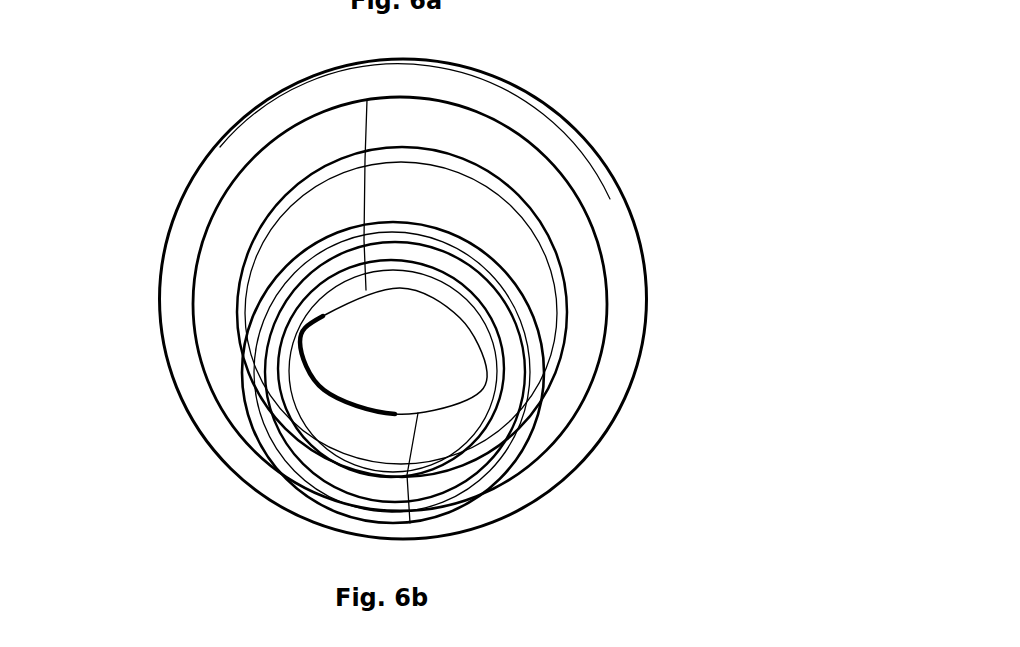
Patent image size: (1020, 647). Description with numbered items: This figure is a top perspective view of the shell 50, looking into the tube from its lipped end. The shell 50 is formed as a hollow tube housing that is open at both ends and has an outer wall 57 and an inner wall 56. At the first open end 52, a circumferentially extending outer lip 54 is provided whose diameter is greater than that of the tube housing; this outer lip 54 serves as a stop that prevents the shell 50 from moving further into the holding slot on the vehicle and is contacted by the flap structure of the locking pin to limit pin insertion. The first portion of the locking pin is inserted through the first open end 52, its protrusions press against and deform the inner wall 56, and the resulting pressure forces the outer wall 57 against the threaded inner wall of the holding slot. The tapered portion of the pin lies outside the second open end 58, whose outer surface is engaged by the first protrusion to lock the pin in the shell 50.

The shell 50 is at (232, 136).
The first open end 52 is at (423, 377).
The circumferentially extending outer lip 54 is at (583, 195).
The inner wall 56 is at (330, 428).
The outer wall 57 is at (458, 203).
The second open end 58 is at (268, 471).